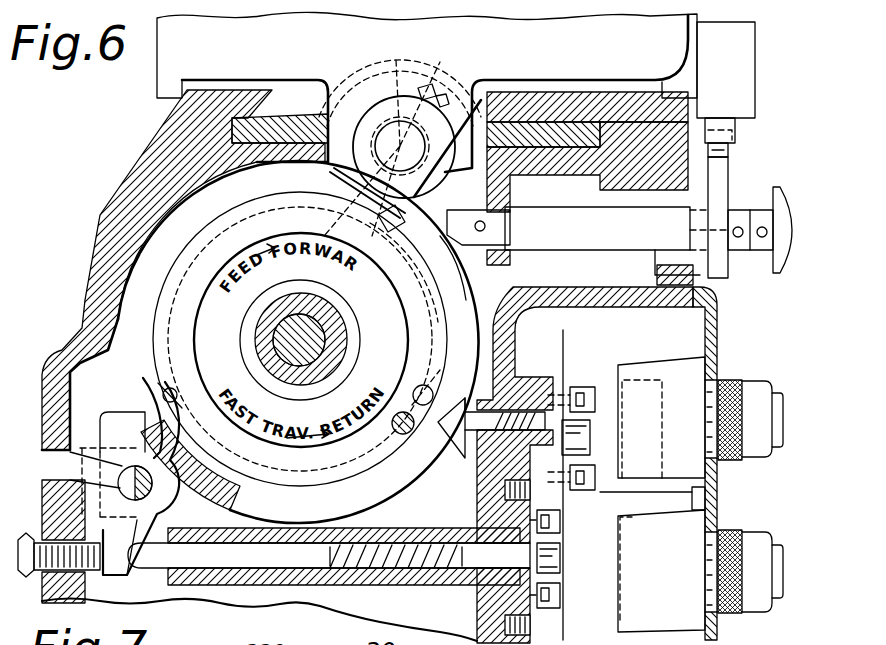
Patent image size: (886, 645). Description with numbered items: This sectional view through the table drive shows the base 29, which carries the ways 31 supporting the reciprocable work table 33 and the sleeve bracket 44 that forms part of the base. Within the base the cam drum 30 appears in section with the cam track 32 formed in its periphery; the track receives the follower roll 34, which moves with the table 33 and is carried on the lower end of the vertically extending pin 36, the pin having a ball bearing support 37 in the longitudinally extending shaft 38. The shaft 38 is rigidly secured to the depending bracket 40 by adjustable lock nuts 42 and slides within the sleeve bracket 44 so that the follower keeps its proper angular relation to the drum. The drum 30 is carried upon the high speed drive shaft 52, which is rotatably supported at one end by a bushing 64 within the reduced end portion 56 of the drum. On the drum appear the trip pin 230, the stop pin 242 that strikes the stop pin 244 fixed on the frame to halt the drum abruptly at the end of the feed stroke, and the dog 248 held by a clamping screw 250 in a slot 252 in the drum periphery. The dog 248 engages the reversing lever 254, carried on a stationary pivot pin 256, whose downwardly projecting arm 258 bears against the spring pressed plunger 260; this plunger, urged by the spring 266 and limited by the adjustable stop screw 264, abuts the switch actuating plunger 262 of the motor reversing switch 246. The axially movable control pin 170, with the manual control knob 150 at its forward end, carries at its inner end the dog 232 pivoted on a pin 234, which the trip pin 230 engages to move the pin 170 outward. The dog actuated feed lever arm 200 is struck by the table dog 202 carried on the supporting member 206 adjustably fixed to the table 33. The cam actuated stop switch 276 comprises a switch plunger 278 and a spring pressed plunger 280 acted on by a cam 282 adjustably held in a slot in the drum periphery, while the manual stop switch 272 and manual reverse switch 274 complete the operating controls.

The base 29 is at (82, 305).
The cam drum 30 is at (173, 275).
The ways 31 is at (250, 100).
The cam track 32 is at (222, 232).
The work table 33 is at (175, 60).
The follower roll 34 is at (400, 215).
The vertically extending pin 36 is at (445, 97).
The ball bearing support 37 is at (383, 92).
The longitudinally extending shaft 38 is at (400, 146).
The depending bracket 40 is at (328, 135).
The adjustable lock nuts 42 is at (440, 136).
The sleeve bracket 44 is at (248, 123).
The high speed drive shaft 52 is at (323, 332).
The reduced end portion 56 is at (340, 353).
The bushing 64 is at (272, 346).
The manual control knob 150 is at (785, 258).
The control pin or plunger 170 is at (607, 214).
The dog actuated feed lever arm 200 is at (725, 177).
The table dog 202 is at (726, 131).
The supporting member 206 is at (732, 63).
The trip pin 230 is at (440, 238).
The dog 232 is at (456, 212).
The pin 234 is at (486, 226).
The stop pin 242 is at (423, 406).
The stop pin 244 is at (403, 436).
The motor reversing switch 246 is at (574, 606).
The dog 248 is at (170, 445).
The clamping screw 250 is at (224, 472).
The slot 252 is at (170, 390).
The reversing lever 254 is at (128, 428).
The stationary pivot pin 256 is at (133, 483).
The downwardly projecting arm 258 is at (118, 568).
The spring pressed plunger 260 is at (298, 556).
The switch actuating plunger 262 is at (551, 559).
The adjustable stop screw 264 is at (74, 521).
The spring 266 is at (412, 548).
The manual stop switch 272 is at (756, 543).
The manual reverse switch 274 is at (755, 393).
The cam actuated stop switch 276 is at (606, 392).
The switch plunger 278 is at (578, 430).
The spring pressed plunger 280 is at (446, 442).
The cam 282 is at (465, 398).